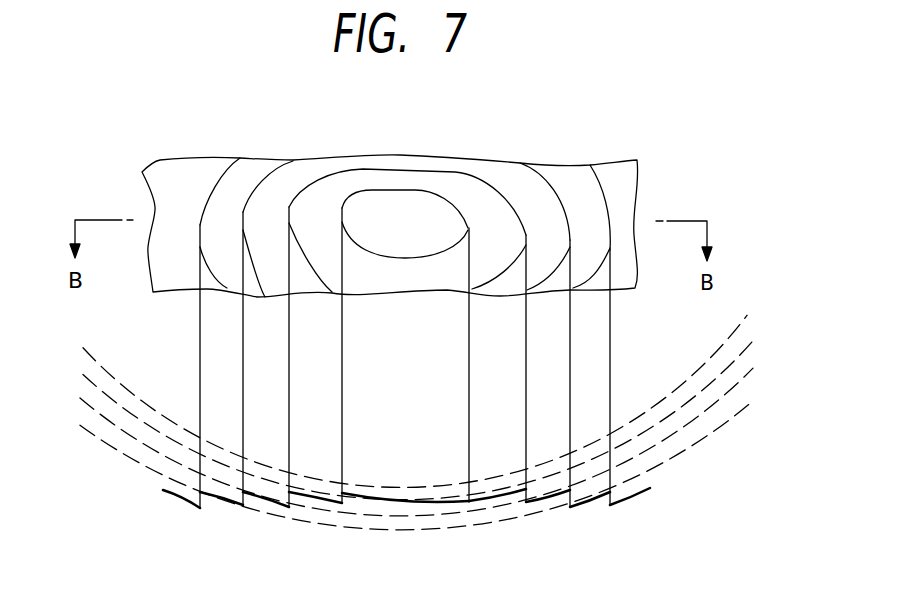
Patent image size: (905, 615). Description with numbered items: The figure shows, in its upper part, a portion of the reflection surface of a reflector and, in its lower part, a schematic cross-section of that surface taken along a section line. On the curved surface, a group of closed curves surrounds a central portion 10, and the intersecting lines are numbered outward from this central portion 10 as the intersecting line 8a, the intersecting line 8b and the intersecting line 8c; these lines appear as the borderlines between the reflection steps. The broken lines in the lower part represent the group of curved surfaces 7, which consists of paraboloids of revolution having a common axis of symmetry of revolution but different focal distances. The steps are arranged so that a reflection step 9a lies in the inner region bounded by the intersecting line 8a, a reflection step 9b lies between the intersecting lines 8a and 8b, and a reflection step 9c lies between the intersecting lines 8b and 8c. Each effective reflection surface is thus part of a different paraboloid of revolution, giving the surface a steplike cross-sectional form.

The central portion 10 is at (394, 197).
The intersecting line 8a is at (440, 188).
The intersecting line 8b is at (500, 193).
The intersecting line 8c is at (555, 192).
The reflection step 9a is at (369, 498).
The reflection step 9b is at (485, 495).
The reflection step 9c is at (541, 500).
The group of curved surfaces 7 is at (768, 300).